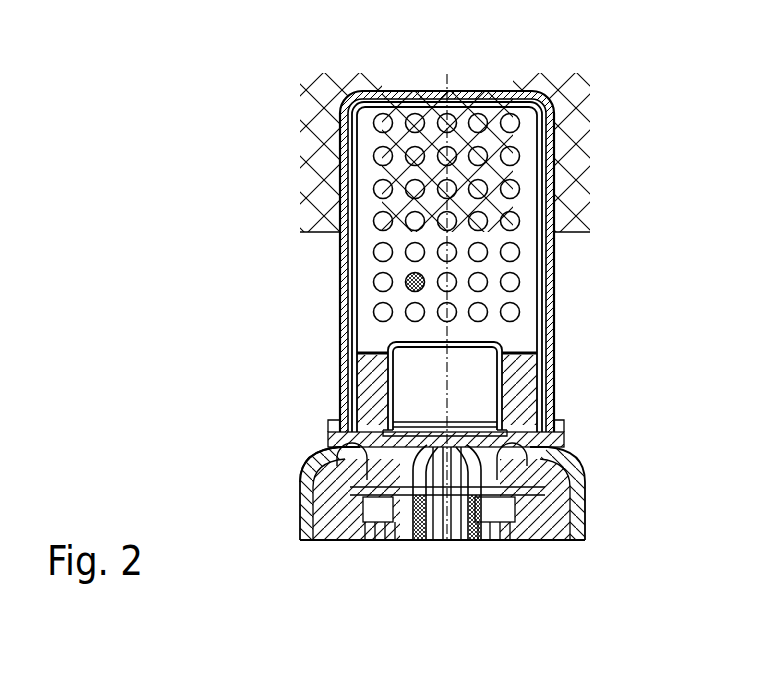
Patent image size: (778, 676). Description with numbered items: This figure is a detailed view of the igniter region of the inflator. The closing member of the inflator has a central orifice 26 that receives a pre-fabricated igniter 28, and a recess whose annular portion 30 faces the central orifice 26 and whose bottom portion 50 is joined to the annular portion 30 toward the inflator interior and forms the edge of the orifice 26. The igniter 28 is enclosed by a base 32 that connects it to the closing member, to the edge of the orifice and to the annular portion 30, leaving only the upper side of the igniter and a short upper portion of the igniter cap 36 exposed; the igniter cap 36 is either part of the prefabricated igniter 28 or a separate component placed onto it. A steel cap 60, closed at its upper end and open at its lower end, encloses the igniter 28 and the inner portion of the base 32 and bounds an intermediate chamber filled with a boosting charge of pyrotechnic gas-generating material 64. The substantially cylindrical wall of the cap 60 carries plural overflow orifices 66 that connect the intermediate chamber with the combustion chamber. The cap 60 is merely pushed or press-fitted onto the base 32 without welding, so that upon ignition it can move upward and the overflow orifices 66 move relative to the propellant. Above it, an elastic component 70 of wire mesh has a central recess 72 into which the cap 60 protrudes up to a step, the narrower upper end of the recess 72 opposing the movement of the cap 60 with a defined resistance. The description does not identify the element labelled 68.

The central orifice 26 is at (345, 437).
The igniter 28 is at (485, 402).
The annular portion 30 is at (567, 500).
The base 32 is at (545, 421).
The igniter cap 36 is at (490, 340).
The bottom portion 50 is at (558, 461).
The cap 60 is at (345, 370).
The boosting charge 64 is at (414, 283).
The overflow orifices 66 is at (357, 350).
The housing shoulder 68 is at (320, 447).
The elastic component 70 is at (575, 93).
The central recess 72 is at (466, 82).